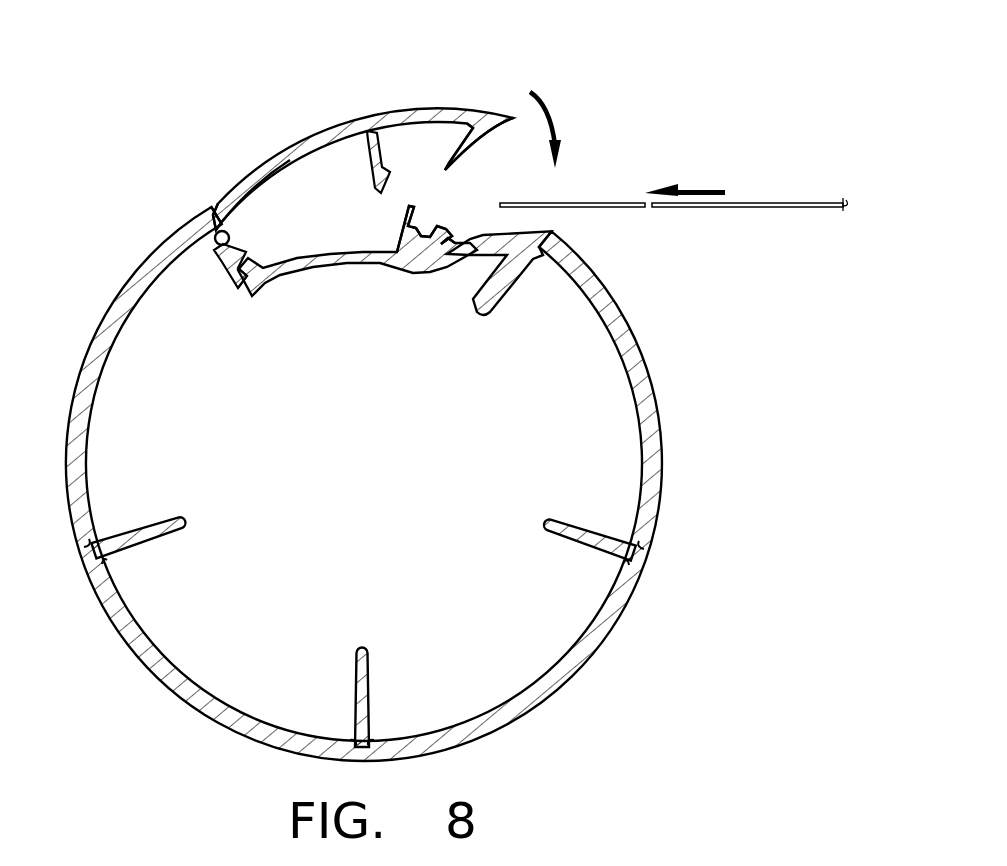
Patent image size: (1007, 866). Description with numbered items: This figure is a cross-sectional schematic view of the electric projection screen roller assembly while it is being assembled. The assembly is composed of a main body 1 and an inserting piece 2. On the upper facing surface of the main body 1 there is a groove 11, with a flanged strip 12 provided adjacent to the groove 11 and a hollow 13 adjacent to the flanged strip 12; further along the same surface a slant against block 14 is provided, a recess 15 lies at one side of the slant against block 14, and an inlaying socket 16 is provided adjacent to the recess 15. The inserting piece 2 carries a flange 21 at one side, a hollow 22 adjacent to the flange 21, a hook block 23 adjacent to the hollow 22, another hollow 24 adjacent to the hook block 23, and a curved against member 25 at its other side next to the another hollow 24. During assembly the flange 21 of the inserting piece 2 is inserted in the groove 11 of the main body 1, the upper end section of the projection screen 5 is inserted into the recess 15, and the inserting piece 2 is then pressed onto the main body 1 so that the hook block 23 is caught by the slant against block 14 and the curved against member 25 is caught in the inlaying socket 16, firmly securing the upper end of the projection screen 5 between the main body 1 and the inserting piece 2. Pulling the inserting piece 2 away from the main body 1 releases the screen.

The main body 1 is at (404, 484).
The inserting piece 2 is at (364, 210).
The projection screen 5 is at (607, 203).
The groove 11 is at (213, 253).
The flanged strip 12 is at (220, 262).
The hollow 13 is at (278, 270).
The slant against block 14 is at (400, 212).
The recess 15 is at (428, 257).
The inlaying socket 16 is at (457, 243).
The flange 21 is at (214, 238).
The hollow 22 is at (278, 178).
The hook block 23 is at (378, 186).
The another hollow 24 is at (413, 140).
The curved against member 25 is at (450, 167).